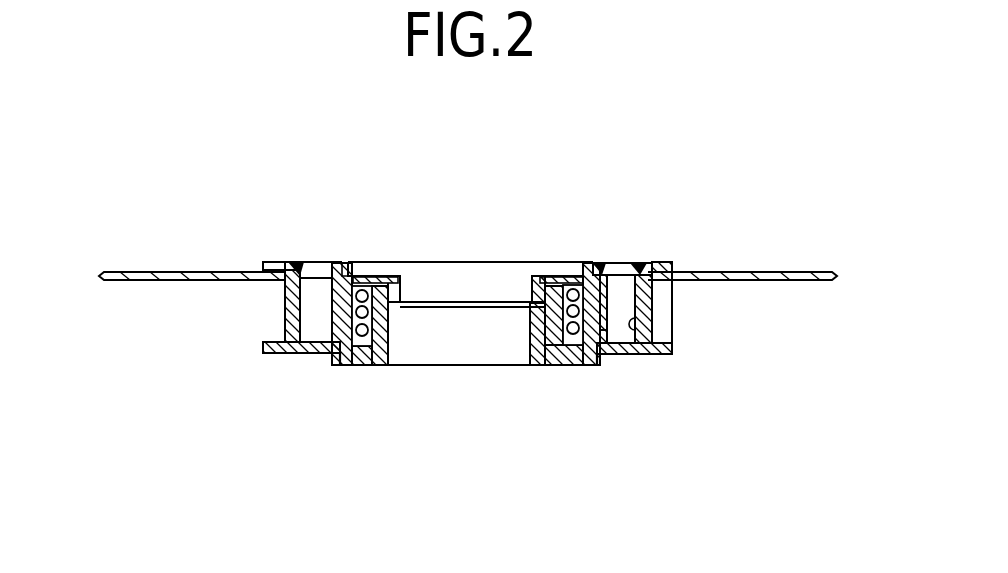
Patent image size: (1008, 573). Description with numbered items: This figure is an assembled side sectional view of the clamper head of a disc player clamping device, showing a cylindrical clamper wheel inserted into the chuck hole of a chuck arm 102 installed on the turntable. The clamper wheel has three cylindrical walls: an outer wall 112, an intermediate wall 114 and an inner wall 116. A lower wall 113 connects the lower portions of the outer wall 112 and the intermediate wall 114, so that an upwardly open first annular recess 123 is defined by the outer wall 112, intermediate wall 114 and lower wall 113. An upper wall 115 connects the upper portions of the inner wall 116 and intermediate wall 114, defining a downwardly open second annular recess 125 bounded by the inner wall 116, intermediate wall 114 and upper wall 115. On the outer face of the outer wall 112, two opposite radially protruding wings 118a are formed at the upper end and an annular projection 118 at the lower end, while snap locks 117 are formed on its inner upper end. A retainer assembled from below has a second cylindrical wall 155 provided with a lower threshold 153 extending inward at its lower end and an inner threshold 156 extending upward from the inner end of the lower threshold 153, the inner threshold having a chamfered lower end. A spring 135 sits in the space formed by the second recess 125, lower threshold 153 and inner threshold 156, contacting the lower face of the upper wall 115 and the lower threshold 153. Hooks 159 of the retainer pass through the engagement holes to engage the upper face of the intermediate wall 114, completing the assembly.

The chuck arm 102 is at (807, 272).
The outer wall 112 is at (648, 308).
The lower wall 113 is at (600, 340).
The intermediate wall 114 is at (607, 275).
The upper wall 115 is at (553, 284).
The inner wall 116 is at (533, 282).
The snap lock 117 is at (633, 267).
The annular projection 118 is at (662, 355).
The wing 118a is at (672, 262).
The first annular recess 123 is at (637, 324).
The second annular recess 125 is at (540, 305).
The spring 135 is at (592, 345).
The lower threshold 153 is at (346, 345).
The second cylindrical wall 155 is at (327, 342).
The inner threshold 156 is at (378, 340).
The hook 159 is at (342, 262).